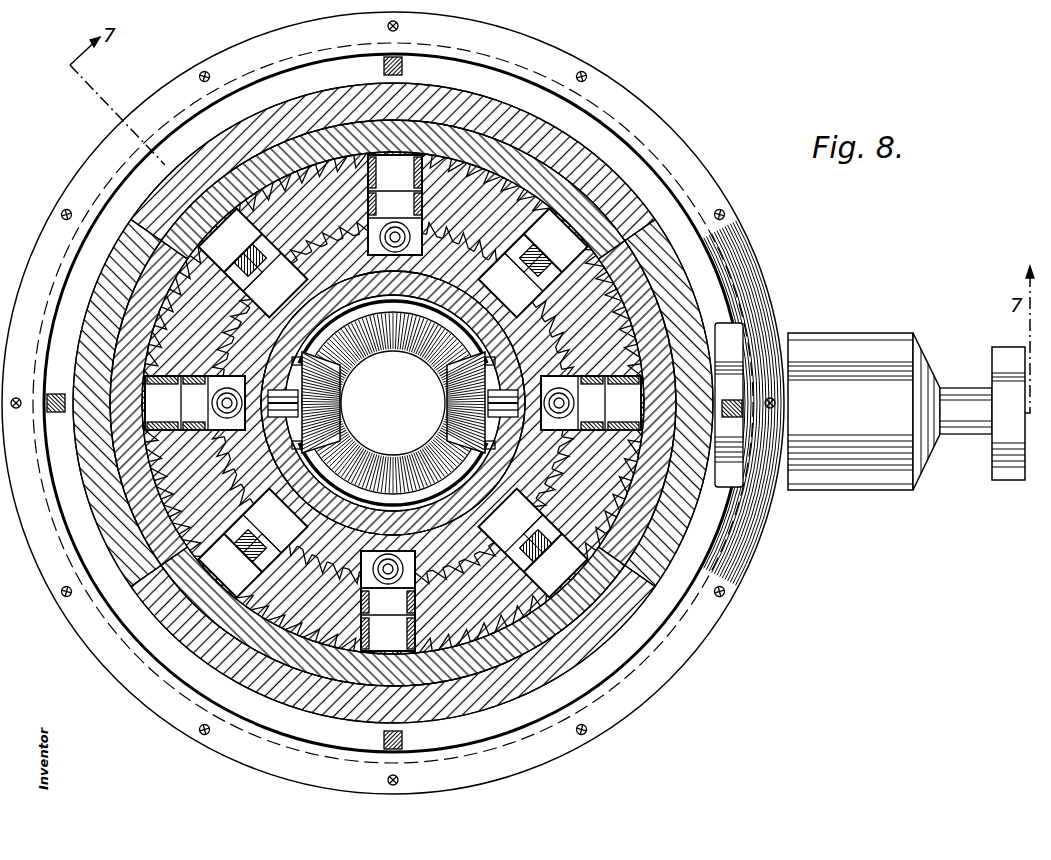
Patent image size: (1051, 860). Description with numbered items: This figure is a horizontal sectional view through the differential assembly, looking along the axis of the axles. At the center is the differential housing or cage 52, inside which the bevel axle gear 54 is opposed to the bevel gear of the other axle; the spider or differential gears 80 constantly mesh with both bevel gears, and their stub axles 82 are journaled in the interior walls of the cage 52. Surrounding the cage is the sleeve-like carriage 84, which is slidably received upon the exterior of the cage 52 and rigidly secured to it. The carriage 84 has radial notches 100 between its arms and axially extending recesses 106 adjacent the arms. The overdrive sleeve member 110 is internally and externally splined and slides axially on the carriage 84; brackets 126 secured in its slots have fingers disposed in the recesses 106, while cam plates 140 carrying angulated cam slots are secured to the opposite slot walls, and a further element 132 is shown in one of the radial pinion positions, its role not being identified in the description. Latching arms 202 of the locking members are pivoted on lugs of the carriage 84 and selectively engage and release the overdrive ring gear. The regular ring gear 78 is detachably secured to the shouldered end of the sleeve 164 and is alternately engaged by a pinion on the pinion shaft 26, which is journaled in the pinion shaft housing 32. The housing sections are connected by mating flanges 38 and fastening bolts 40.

The pinion shaft 26 is at (963, 396).
The pinion shaft housing 32 is at (853, 342).
The mating flanges 38 is at (762, 541).
The fastening bolts 40 is at (726, 608).
The differential housing 52 is at (393, 403).
The bevel axle gear 54 is at (395, 351).
The ring gear 78 is at (393, 403).
The differential gears 80 is at (392, 403).
The stub axles 82 is at (584, 391).
The carriage 84 is at (393, 413).
The radial notches 100 is at (253, 543).
The axially extending recesses 106 is at (370, 232).
The sleeve member 110 is at (392, 402).
The brackets 126 is at (365, 604).
The pinion block 132 is at (195, 403).
The cam plates 140 is at (388, 601).
The sleeve 164 is at (375, 386).
The latching arm 202 is at (532, 530).